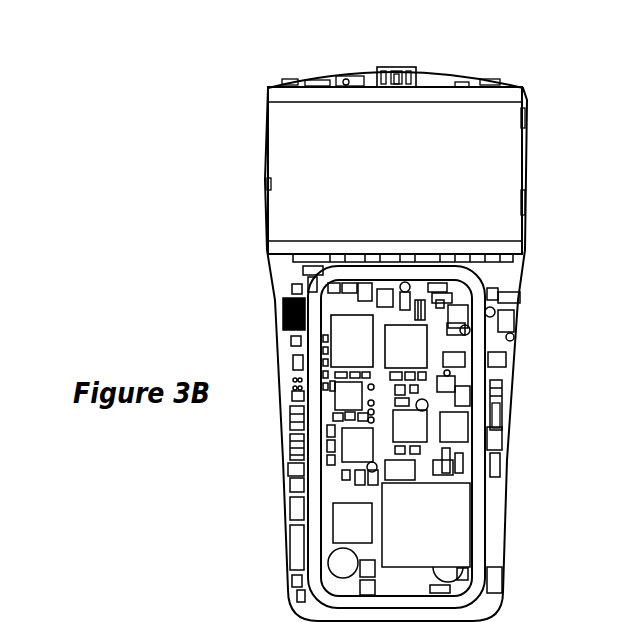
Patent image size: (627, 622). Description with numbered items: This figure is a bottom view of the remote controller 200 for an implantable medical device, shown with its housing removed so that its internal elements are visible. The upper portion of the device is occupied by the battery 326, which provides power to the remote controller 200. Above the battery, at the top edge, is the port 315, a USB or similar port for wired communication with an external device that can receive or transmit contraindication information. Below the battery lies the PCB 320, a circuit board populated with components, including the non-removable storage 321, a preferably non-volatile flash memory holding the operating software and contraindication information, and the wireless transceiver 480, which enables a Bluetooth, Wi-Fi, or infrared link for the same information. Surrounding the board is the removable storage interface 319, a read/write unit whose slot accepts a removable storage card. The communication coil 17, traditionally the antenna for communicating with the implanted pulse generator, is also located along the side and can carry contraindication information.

The remote controller 200 is at (238, 118).
The port 315 is at (398, 67).
The battery 326 is at (415, 195).
The printed circuit board (PCB) 320 is at (277, 348).
The non-removable storage 321 is at (350, 350).
The wireless transceiver 480 is at (418, 348).
The communication coil 17 is at (483, 410).
The removable storage interface 319 is at (496, 517).